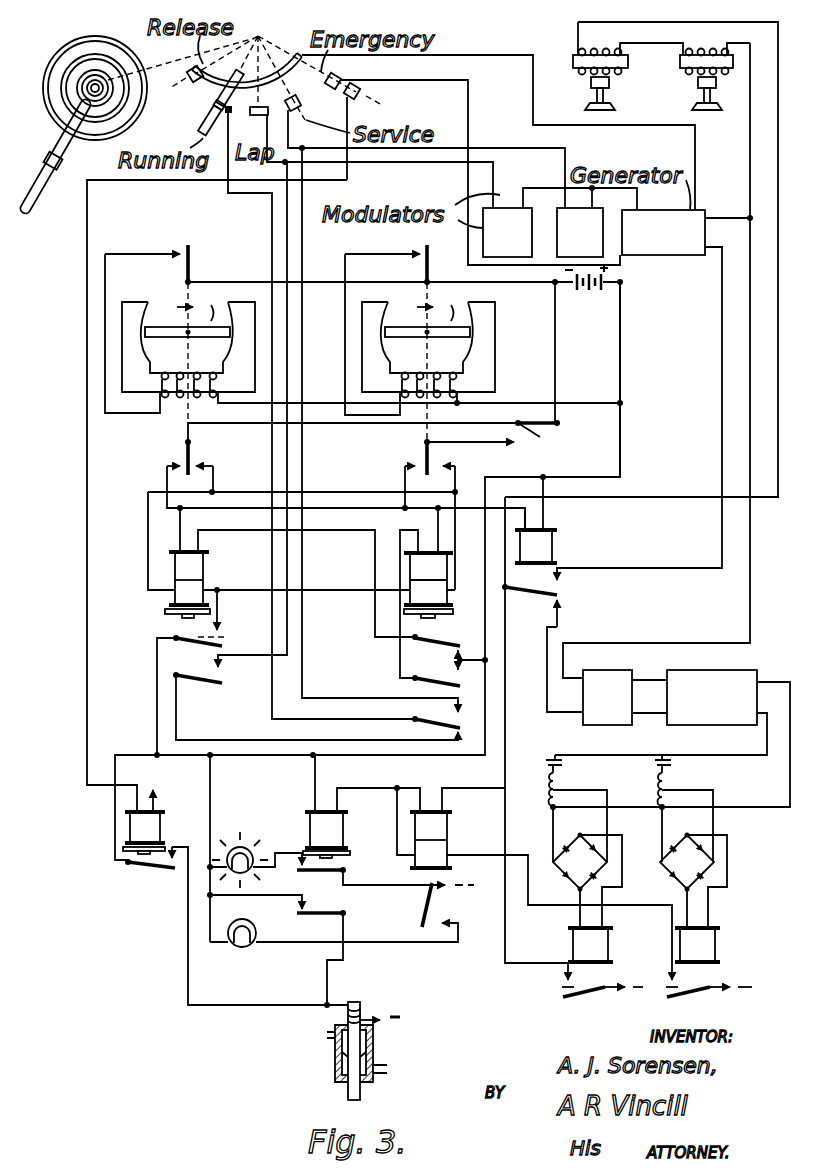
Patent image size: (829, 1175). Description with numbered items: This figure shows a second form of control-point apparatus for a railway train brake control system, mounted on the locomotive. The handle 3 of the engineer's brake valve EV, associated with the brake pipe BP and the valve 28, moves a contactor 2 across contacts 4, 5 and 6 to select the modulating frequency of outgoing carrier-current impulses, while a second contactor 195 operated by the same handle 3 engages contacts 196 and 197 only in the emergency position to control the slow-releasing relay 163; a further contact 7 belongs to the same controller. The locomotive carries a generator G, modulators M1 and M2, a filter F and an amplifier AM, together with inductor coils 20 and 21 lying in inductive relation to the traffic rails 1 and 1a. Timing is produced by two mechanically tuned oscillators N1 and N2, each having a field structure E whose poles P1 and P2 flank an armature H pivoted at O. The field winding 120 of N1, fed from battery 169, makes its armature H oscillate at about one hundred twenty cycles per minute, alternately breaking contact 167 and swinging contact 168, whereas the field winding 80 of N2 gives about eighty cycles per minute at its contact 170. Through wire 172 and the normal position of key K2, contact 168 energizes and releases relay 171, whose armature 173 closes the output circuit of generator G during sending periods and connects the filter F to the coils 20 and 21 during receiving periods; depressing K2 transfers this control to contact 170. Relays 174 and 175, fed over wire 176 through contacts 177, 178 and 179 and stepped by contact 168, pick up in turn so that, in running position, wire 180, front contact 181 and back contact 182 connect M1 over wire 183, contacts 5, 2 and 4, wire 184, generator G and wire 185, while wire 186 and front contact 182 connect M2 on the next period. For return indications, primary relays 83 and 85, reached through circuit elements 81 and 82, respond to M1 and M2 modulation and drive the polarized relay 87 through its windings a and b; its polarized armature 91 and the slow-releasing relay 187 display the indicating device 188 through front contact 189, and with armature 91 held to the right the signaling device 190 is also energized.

The traffic rail 1 is at (610, 96).
The traffic rail 1a is at (706, 96).
The contactor 2 is at (214, 110).
The handle 3 is at (45, 188).
The contact 4 is at (302, 56).
The contact 5 is at (196, 82).
The contact 6 is at (256, 114).
The service contact 7 is at (301, 106).
The inductor coil 20 is at (600, 52).
The inductor coil 21 is at (718, 52).
The valve 28 is at (374, 1050).
The field winding 80 is at (410, 338).
The tuned circuit 81 is at (573, 780).
The tuned circuit 82 is at (681, 780).
The primary relay 83 is at (608, 946).
The primary relay 85 is at (715, 946).
The polarized relay 87 is at (447, 823).
The polarized armature 91 is at (426, 903).
The field winding 120 is at (176, 398).
The slow-releasing relay 163 is at (155, 834).
The contact 167 is at (190, 260).
The contact 168 is at (183, 455).
The battery 169 is at (597, 290).
The contact 170 is at (422, 455).
The relay 171 is at (540, 548).
The wire 172 is at (526, 516).
The armature 173 is at (535, 593).
The relay 174 is at (204, 573).
The relay 175 is at (438, 600).
The wire 176 is at (620, 364).
The back contact 177 is at (432, 640).
The front contact 178 is at (226, 628).
The front contact 179 is at (448, 680).
The wire 180 is at (287, 236).
The front contact 181 is at (208, 676).
The contact 182 is at (456, 722).
The wire 183 is at (272, 460).
The wire 184 is at (778, 95).
The wire 185 is at (637, 195).
The wire 186 is at (302, 694).
The slow-releasing relay 187 is at (310, 826).
The indicating device 188 is at (243, 838).
The front contact 189 is at (297, 874).
The signaling device 190 is at (238, 947).
The contactor 195 is at (205, 128).
The contact 196 is at (345, 70).
The contact 197 is at (359, 91).
The engineer's brake valve EV is at (67, 56).
The pole P1 is at (132, 313).
The pole P2 is at (242, 310).
The mechanically tuned oscillator N1 is at (201, 303).
The mechanically tuned oscillator N2 is at (440, 303).
The pivot O is at (186, 330).
The armature H is at (222, 338).
The field structure E is at (133, 395).
The key K2 is at (540, 433).
The modulator M1 is at (507, 232).
The modulator M2 is at (580, 232).
The generator G is at (663, 232).
The filter F is at (585, 738).
The amplifier AM is at (678, 738).
The brake pipe BP is at (335, 1036).
The relay winding a is at (447, 832).
The relay winding b is at (447, 858).